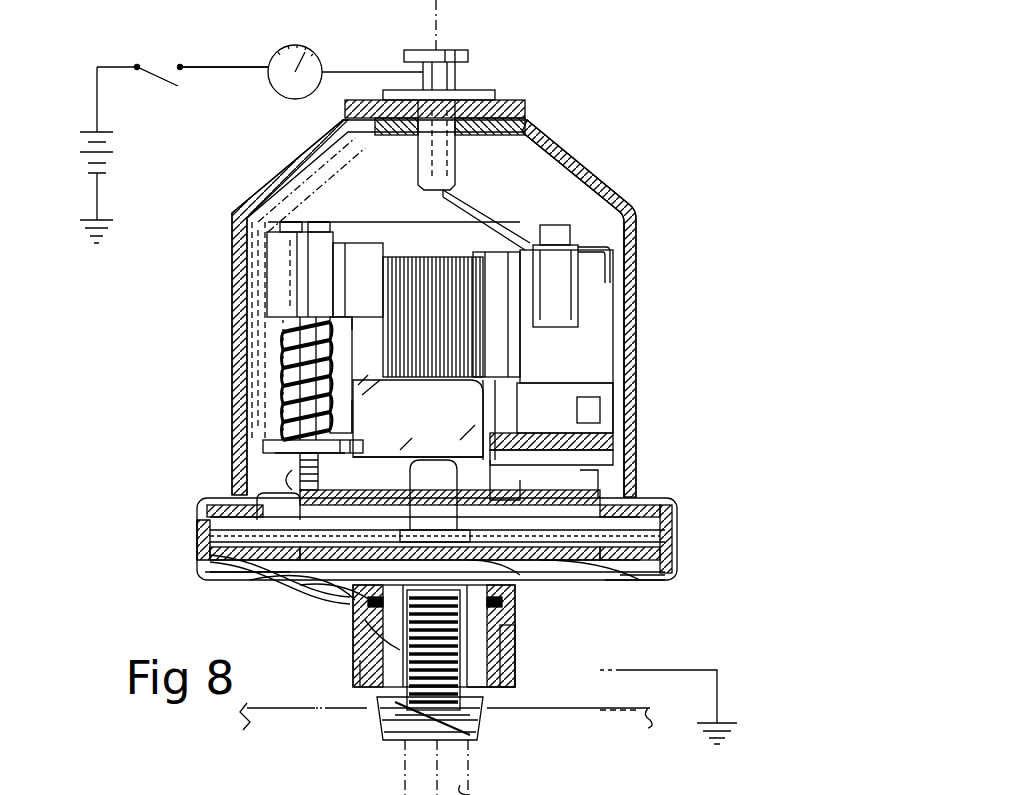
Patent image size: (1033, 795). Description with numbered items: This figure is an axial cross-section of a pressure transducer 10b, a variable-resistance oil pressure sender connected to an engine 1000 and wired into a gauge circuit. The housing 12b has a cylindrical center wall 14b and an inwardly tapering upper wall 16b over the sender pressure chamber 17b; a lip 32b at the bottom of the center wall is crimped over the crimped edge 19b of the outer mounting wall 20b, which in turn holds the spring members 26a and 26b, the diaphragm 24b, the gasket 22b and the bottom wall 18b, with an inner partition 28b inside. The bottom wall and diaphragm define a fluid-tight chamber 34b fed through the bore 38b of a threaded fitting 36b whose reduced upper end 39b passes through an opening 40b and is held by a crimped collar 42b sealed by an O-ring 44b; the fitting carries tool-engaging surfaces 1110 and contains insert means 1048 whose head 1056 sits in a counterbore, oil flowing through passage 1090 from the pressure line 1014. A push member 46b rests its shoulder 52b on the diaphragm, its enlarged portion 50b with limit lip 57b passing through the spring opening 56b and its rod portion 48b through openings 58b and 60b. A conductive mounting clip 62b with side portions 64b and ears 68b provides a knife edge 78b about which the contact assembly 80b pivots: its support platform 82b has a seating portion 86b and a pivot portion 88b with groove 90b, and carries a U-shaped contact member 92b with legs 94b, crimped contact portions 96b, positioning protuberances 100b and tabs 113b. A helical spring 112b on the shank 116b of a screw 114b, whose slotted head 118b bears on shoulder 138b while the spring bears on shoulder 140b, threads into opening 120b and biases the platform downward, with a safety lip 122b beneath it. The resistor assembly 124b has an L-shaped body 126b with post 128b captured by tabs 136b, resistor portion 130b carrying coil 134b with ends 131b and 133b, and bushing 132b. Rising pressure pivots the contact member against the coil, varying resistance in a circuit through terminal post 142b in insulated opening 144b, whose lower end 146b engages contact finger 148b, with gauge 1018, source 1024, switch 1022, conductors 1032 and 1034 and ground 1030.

The pressure transducer 10b is at (675, 136).
The housing 12b is at (640, 232).
The center wall 14b is at (632, 345).
The upper wall 16b is at (293, 162).
The sender pressure chamber 17b is at (205, 528).
The bottom wall 18b is at (520, 613).
The crimped peripheral edge 19b is at (645, 570).
The outer mounting wall 20b is at (600, 497).
The gasket 22b is at (640, 595).
The diaphragm 24b is at (263, 590).
The spring member 26a is at (292, 598).
The spring member 26b is at (547, 550).
The inner partition 28b is at (637, 530).
The lip 32b is at (672, 545).
The fluid-tight chamber 34b is at (547, 613).
The threaded fitting 36b is at (610, 695).
The bore or passage 38b is at (450, 743).
The reduced diameter upper end 39b is at (360, 673).
The opening 40b is at (480, 660).
The collar 42b is at (323, 590).
The O-ring 44b is at (363, 633).
The push member 46b is at (450, 517).
The rod portion 48b is at (450, 490).
The enlarged diameter portion 50b is at (470, 540).
The shoulder 52b is at (450, 564).
The central opening 56b is at (504, 572).
The lip 57b is at (288, 579).
The opening 58b is at (297, 590).
The opening 60b is at (363, 513).
The mounting clip 62b is at (622, 390).
The side portions 64b is at (557, 385).
The ears 68b is at (527, 480).
The knife edge 78b is at (473, 430).
The contact assembly 80b is at (343, 463).
The contact member support platform 82b is at (285, 448).
The seating portion 86b is at (265, 440).
The pivot portion 88b is at (547, 450).
The V-shaped groove 90b is at (600, 465).
The contact member 92b is at (345, 418).
The contact legs 94b is at (412, 421).
The contact portions 96b is at (410, 380).
The protuberances 100b is at (477, 453).
The helical spring 112b is at (300, 395).
The tabs 113b is at (523, 430).
The screw 114b is at (285, 365).
The shank 116b is at (262, 265).
The slotted head 118b is at (330, 220).
The opening 120b is at (300, 467).
The lip 122b is at (450, 505).
The resistor assembly 124b is at (397, 255).
The body member 126b is at (493, 277).
The post portion 128b is at (580, 347).
The resistor portion 130b is at (493, 260).
The coil end 131b is at (345, 318).
The bushing portion 132b is at (340, 236).
The coil end 133b is at (529, 276).
The coil 134b is at (390, 263).
The tabs / bushing walls 136b is at (265, 245).
The shoulder 138b is at (245, 213).
The shoulder 140b is at (265, 328).
The electrical terminal post 142b is at (462, 70).
The insulated opening 144b is at (467, 108).
The lower end 146b is at (418, 175).
The contact finger 148b is at (470, 187).
The engine 1000 is at (607, 727).
The conduit or passage 1014 is at (470, 790).
The electrical gauge 1018 is at (275, 97).
The switch means 1022 is at (158, 68).
The source of electrical potential 1024 is at (113, 140).
The ground 1030 is at (735, 742).
The conductor means 1032 is at (203, 67).
The conductor means 1034 is at (347, 72).
The insert means 1048 is at (430, 730).
The head or flange 1056 is at (487, 693).
The passage means 1090 is at (483, 718).
The tool-engaging surface means 1110 is at (357, 707).